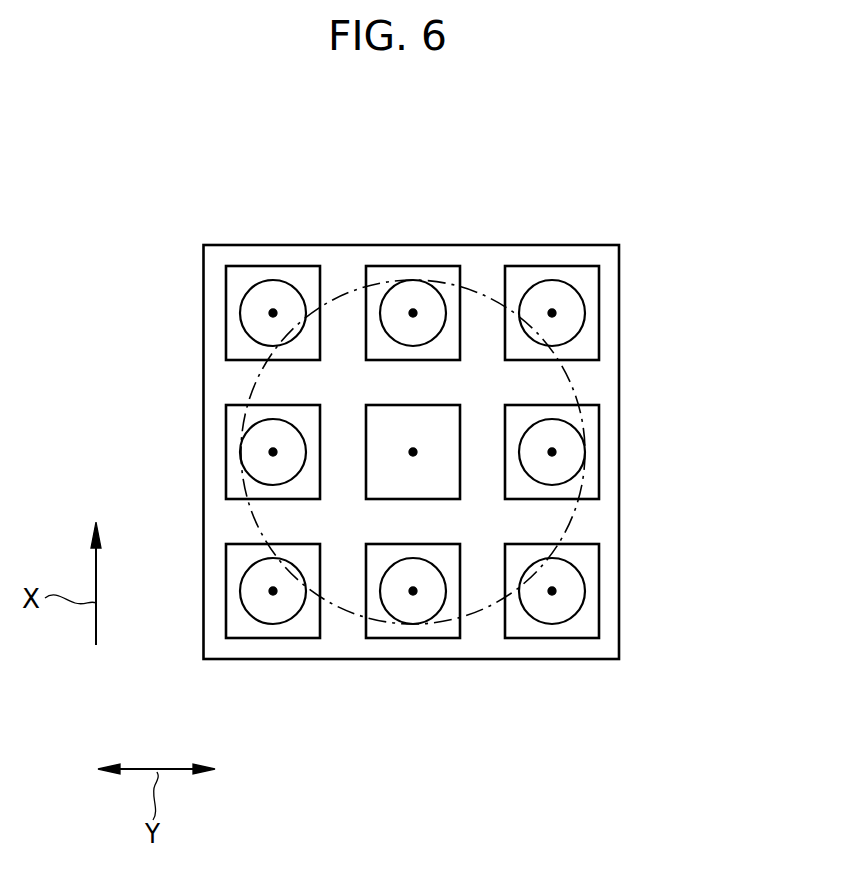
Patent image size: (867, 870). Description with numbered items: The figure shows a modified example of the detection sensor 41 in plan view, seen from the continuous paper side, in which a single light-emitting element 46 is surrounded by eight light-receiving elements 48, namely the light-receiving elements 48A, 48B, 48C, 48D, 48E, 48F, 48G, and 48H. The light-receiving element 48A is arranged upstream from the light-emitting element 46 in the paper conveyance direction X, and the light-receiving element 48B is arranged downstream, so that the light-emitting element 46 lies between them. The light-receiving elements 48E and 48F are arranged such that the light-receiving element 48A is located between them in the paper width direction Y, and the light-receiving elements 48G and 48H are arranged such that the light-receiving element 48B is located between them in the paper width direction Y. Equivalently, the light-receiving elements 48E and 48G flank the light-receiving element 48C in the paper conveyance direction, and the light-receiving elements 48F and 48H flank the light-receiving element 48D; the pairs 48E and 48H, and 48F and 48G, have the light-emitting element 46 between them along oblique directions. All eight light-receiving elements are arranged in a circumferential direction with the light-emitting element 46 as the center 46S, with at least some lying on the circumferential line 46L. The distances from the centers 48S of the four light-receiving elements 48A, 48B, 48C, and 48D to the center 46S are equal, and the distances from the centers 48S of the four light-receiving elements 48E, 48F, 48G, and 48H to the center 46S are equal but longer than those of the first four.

The detection sensor 41 is at (200, 280).
The light-emitting element 46 is at (435, 493).
The center of the light-emitting element 46S is at (413, 452).
The line in the circumferential direction 46L is at (573, 383).
The light-receiving elements 48 is at (404, 449).
The light-receiving element 48A is at (383, 632).
The light-receiving element 48B is at (424, 272).
The light-receiving element 48C is at (233, 427).
The light-receiving element 48D is at (592, 427).
The light-receiving element 48E is at (247, 632).
The light-receiving element 48F is at (522, 632).
The light-receiving element 48G is at (294, 272).
The light-receiving element 48H is at (576, 273).
The centers of the light-receiving elements 48S is at (273, 313).